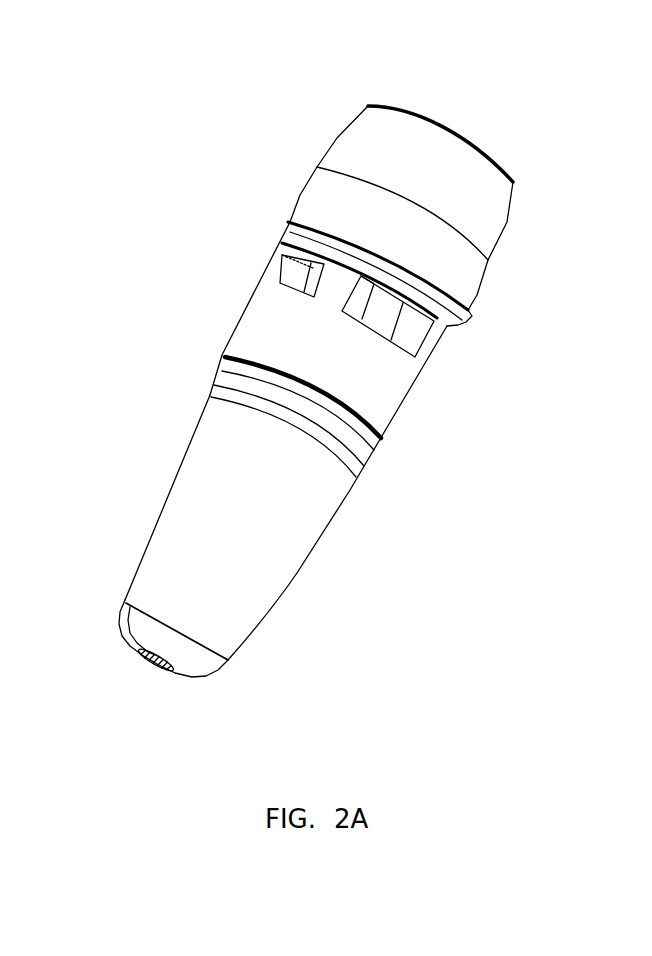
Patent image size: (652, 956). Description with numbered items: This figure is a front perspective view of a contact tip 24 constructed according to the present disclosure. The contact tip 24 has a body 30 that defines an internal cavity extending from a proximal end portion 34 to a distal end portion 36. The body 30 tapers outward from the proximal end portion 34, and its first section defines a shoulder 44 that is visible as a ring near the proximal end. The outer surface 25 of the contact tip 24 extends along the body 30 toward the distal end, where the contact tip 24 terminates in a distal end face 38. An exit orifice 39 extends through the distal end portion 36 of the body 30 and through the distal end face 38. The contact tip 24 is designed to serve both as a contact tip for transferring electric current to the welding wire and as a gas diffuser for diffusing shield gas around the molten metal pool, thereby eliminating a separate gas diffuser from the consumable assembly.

The contact tip 24 is at (266, 166).
The proximal end portion 34 is at (481, 208).
The shoulder 44 is at (290, 225).
The body 30 is at (391, 399).
The outer surface 25 is at (295, 571).
The distal end portion 36 is at (244, 671).
The distal end face 38 is at (140, 651).
The exit orifice 39 is at (153, 666).